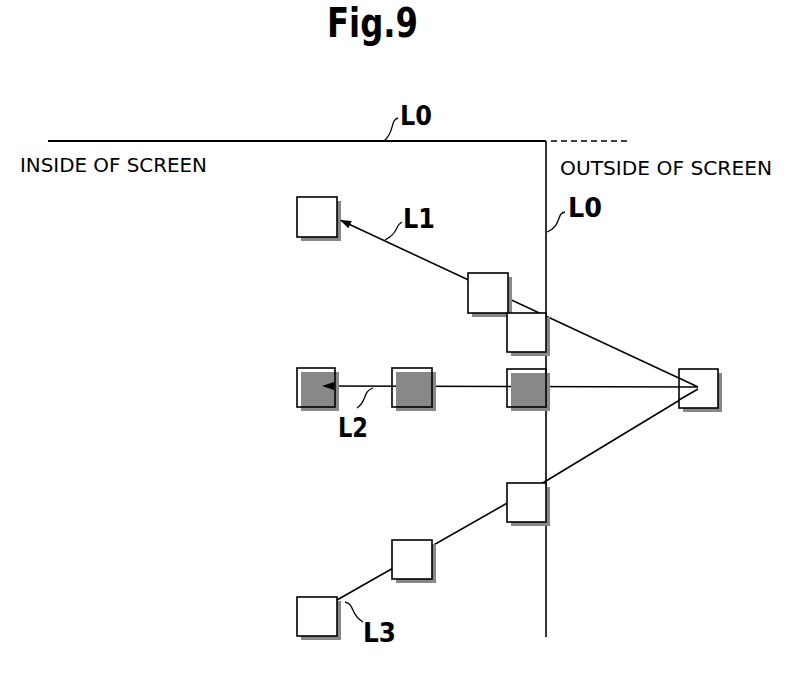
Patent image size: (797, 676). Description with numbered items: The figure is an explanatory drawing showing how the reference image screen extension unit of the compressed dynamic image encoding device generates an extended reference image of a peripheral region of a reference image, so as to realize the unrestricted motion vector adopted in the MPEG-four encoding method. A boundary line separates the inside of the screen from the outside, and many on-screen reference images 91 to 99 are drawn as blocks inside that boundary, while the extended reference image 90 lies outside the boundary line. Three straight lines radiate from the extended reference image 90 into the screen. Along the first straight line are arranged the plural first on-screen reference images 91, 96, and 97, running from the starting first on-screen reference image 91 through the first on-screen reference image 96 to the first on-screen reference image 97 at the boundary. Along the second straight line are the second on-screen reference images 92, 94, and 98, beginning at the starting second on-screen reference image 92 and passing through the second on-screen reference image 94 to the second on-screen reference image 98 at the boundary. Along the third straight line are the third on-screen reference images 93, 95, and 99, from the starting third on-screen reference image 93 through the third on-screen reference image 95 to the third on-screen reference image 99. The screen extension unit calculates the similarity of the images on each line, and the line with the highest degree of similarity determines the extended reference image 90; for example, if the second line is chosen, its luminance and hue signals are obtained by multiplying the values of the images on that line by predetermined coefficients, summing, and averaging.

The extended reference image 90 is at (700, 369).
The starting first on-screen reference image 91 is at (333, 197).
The starting second on-screen reference image 92 is at (337, 367).
The starting third on-screen reference image 93 is at (315, 596).
The second on-screen reference image 94 is at (417, 368).
The third on-screen reference image 95 is at (415, 539).
The first on-screen reference image 96 is at (506, 273).
The first on-screen reference image 97 is at (548, 342).
The second on-screen reference image 98 is at (548, 409).
The third on-screen reference image 99 is at (549, 505).